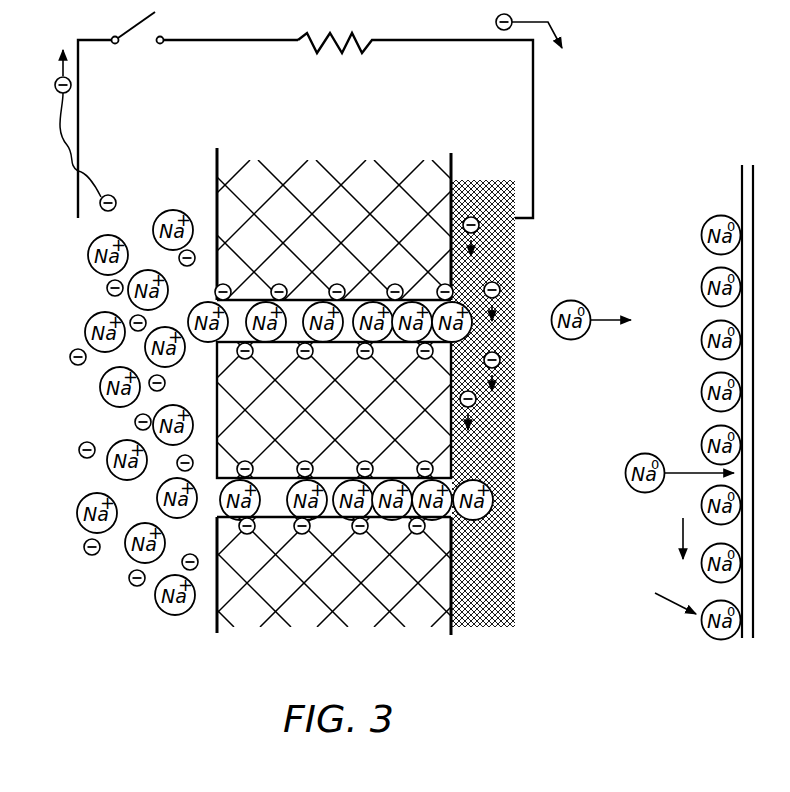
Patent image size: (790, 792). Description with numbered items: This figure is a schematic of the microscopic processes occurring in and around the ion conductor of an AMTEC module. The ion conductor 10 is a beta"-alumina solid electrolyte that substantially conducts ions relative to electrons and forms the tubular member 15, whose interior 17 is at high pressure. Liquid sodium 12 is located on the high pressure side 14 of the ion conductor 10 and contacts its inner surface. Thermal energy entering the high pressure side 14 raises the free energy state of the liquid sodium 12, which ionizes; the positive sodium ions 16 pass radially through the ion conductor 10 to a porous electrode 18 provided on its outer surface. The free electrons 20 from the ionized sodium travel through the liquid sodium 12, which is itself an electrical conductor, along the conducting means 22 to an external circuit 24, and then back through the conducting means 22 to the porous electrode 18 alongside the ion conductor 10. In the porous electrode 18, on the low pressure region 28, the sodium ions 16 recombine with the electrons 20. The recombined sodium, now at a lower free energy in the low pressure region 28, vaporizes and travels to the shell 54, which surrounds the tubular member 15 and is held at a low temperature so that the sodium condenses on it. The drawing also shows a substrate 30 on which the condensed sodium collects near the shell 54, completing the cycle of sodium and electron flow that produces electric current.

The ion conductor 10 is at (281, 157).
The liquid sodium 12 is at (143, 212).
The high pressure side 14 is at (168, 637).
The tubular member 15 is at (341, 391).
The sodium ions 16 is at (264, 358).
The interior 17 is at (92, 411).
The porous electrode 18 is at (481, 180).
The electrons 20 is at (78, 171).
The conducting means 22 is at (78, 214).
The external circuit 24 is at (313, 50).
The low pressure region 28 is at (612, 638).
The substrate 30 is at (736, 646).
The shell 54 is at (706, 639).